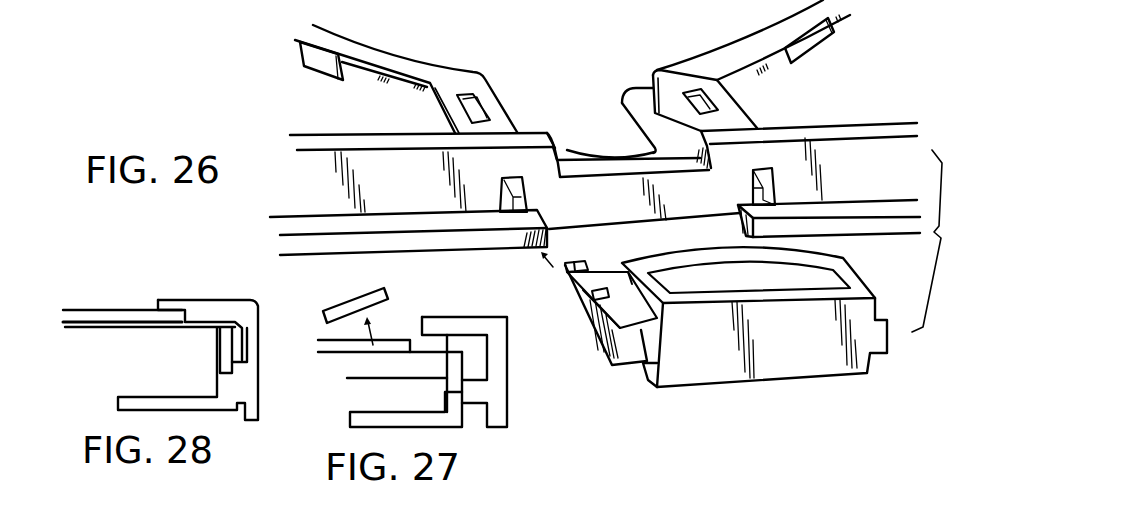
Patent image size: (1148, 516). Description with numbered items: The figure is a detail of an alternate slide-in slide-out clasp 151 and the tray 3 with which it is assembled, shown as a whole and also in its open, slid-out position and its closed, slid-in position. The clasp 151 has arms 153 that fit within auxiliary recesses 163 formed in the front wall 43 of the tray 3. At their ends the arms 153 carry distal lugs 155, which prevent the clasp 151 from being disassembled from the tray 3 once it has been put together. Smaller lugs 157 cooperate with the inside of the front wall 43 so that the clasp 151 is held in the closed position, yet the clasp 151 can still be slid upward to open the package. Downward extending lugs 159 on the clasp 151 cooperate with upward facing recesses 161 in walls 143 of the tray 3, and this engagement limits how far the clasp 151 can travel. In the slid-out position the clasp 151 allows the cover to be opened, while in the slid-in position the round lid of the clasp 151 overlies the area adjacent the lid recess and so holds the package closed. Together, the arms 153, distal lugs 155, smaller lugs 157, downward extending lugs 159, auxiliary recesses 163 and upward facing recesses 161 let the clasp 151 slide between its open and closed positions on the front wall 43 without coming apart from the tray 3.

In FIG. 26, the tray 3 is at (422, 257).
In FIG. 26, the front wall 43 is at (418, 191).
In FIG. 26, the walls 143 is at (488, 85).
In FIG. 26, the clasp 151 is at (734, 384).
In FIG. 27, the clasp 151 is at (516, 382).
In FIG. 28, the clasp 151 is at (239, 294).
In FIG. 26, the arms 153 is at (600, 330).
In FIG. 26, the distal lugs 155 is at (657, 279).
In FIG. 26, the smaller lugs 157 is at (585, 280).
In FIG. 26, the downward extending lugs 159 is at (565, 292).
In FIG. 26, the upward facing recesses 161 is at (473, 115).
In FIG. 26, the auxiliary recesses 163 is at (527, 192).